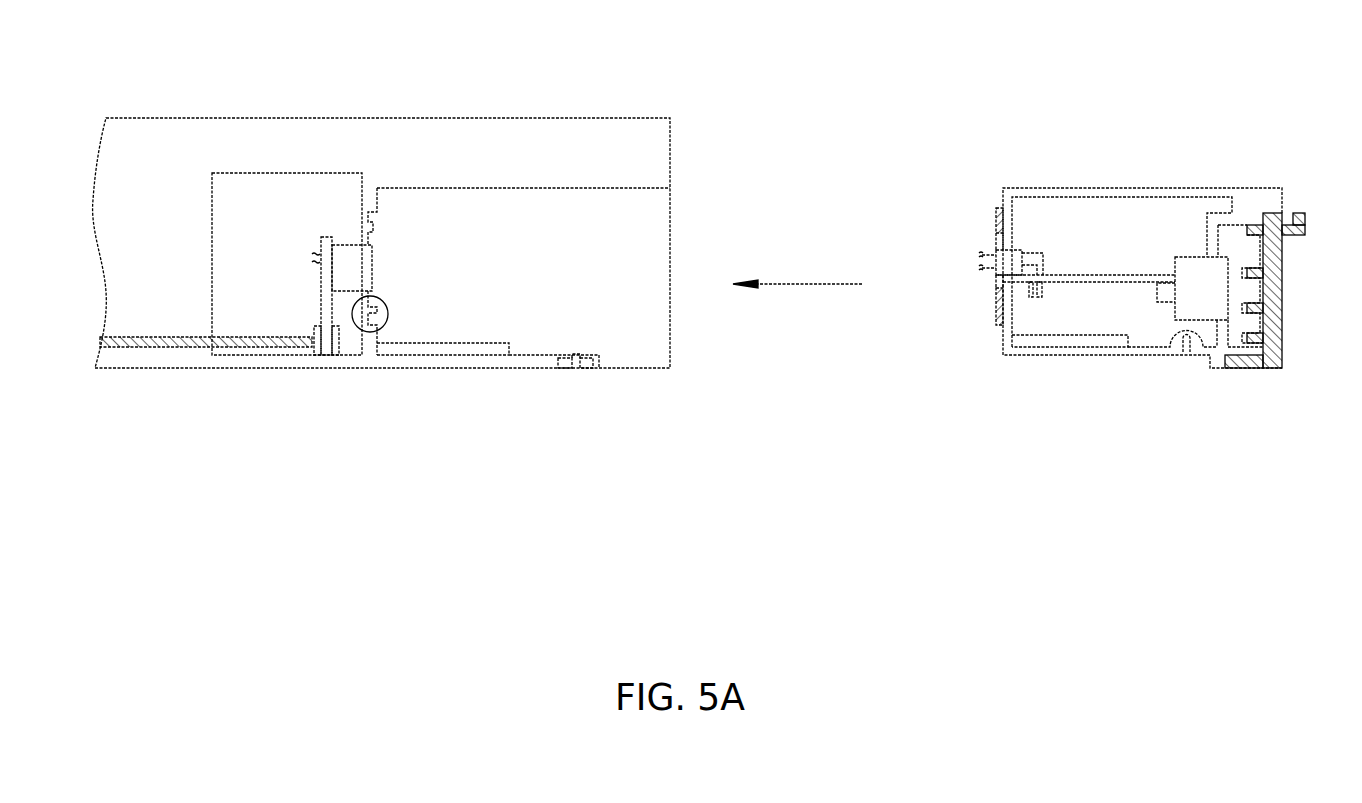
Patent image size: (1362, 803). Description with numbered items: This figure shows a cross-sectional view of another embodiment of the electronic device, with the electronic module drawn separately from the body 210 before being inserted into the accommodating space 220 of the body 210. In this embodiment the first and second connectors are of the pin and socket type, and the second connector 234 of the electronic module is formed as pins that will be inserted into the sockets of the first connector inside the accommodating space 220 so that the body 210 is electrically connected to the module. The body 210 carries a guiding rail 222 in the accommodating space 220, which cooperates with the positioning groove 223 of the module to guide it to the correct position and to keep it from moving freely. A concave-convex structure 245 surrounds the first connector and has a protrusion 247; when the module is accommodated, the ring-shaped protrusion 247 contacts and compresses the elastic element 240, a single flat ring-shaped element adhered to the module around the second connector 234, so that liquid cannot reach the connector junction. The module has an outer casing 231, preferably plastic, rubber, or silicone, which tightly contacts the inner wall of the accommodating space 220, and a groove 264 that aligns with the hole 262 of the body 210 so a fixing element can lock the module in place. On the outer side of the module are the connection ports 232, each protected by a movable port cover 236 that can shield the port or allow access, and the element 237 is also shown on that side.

The body 210 is at (148, 150).
The accommodating space 220 is at (641, 249).
The protrusion 247 is at (378, 232).
The concave-convex structure 245 is at (353, 323).
The guiding rail 222 is at (463, 347).
The hole 262 is at (577, 368).
The outer casing 231 is at (1128, 192).
The positioning groove 223 is at (1062, 340).
The groove 264 is at (1185, 352).
The second connector 234 is at (982, 268).
The elastic element 240 is at (1000, 223).
The connection port 232 is at (1190, 272).
The contact teeth 237 is at (1282, 270).
The port cover 236 is at (1283, 285).